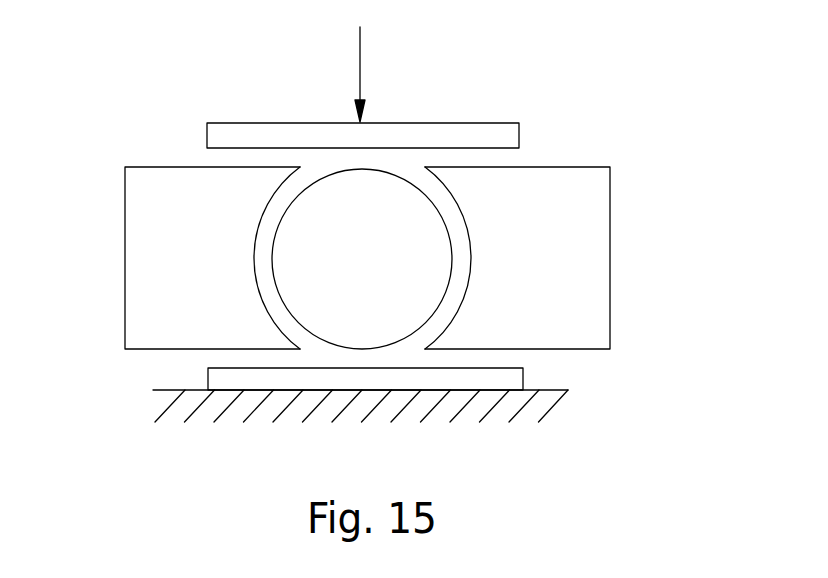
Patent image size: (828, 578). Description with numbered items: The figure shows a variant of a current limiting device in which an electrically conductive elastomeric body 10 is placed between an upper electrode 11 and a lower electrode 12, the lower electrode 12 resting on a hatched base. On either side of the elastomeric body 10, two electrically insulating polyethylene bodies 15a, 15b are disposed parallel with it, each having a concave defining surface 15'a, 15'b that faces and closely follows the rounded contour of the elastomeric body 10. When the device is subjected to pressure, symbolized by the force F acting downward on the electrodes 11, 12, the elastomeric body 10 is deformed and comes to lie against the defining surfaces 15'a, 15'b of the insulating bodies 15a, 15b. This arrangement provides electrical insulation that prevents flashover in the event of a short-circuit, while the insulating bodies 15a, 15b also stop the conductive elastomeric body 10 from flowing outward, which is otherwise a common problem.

The electrically conductive elastomeric body 10 is at (382, 277).
The electrode 11 is at (489, 135).
The electrode 12 is at (523, 373).
The electrically insulating polyethylene body 15a is at (556, 258).
The electrically insulating polyethylene body 15b is at (176, 257).
The defining surface 15'a is at (482, 258).
The defining surface 15'b is at (246, 258).
The force F is at (373, 74).